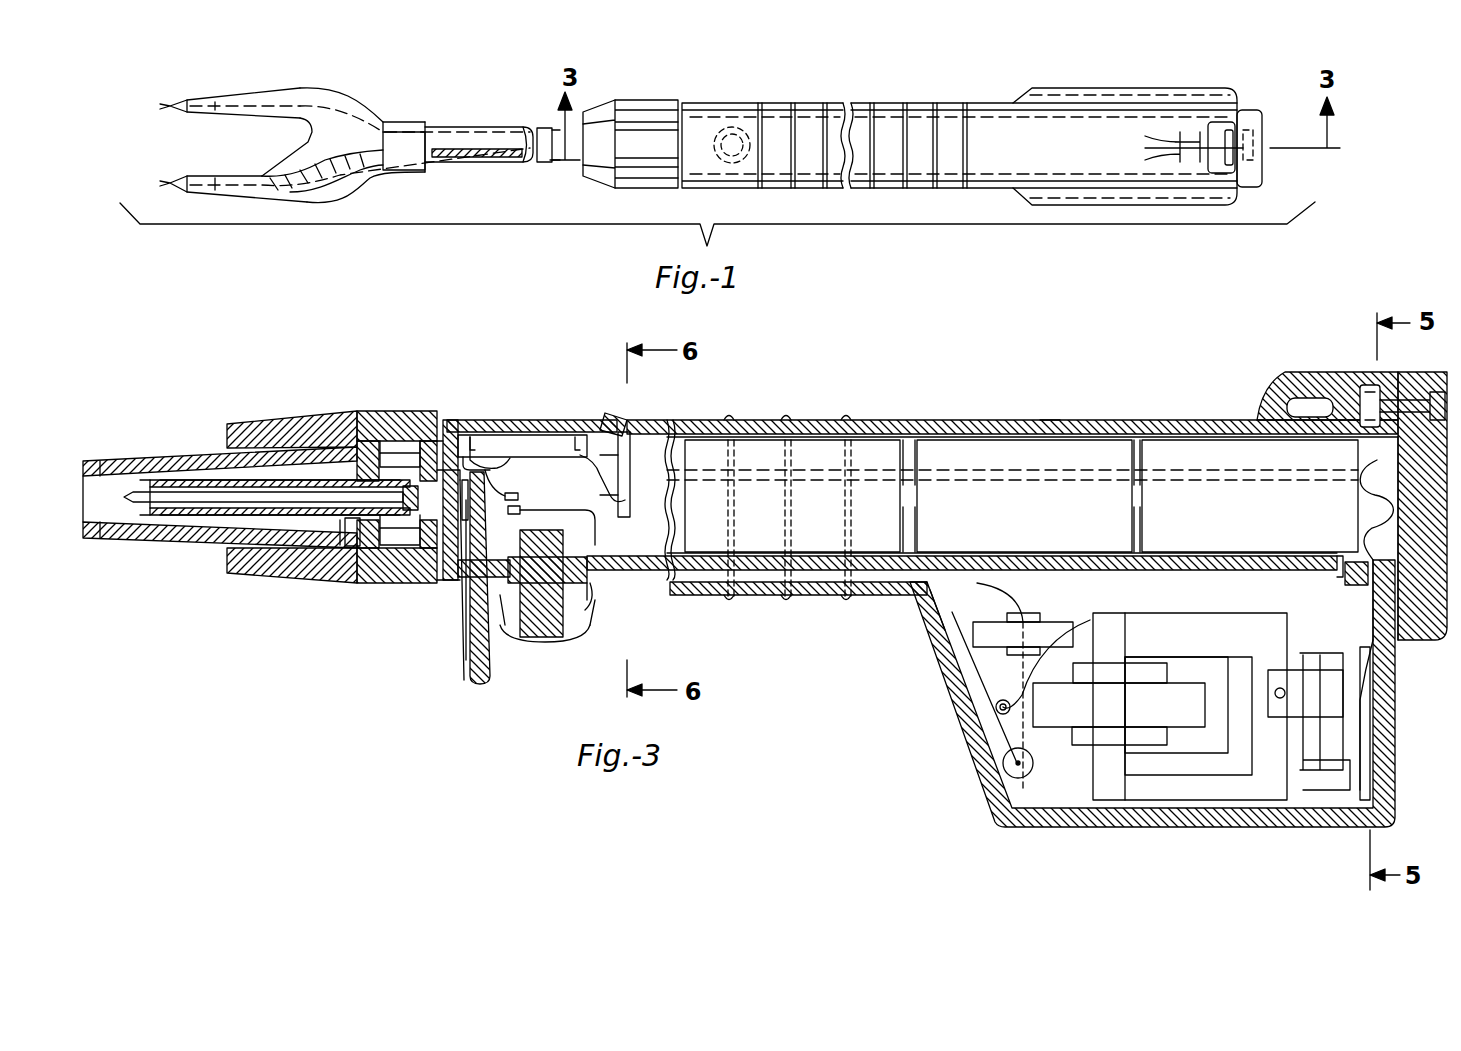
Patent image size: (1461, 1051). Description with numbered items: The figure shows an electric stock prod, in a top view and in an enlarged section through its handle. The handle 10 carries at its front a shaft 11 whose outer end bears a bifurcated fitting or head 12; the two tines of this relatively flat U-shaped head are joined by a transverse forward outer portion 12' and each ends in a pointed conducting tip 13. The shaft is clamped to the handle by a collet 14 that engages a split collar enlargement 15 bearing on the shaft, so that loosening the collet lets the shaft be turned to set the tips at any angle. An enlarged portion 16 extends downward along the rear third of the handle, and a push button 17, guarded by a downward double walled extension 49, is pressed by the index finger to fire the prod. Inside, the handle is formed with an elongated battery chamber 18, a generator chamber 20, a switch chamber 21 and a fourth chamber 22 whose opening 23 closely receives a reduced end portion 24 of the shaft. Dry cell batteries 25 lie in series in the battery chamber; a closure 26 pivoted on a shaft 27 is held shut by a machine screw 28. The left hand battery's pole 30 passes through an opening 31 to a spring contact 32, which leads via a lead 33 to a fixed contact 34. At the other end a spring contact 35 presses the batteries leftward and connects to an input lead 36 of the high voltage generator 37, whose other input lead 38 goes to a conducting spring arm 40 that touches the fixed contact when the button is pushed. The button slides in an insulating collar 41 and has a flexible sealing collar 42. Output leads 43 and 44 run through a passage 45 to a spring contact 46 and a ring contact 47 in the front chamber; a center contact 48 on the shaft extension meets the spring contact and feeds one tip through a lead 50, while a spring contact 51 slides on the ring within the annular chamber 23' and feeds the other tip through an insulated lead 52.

In FIG. 1, the handle 10 is at (882, 93).
In FIG. 3, the handle 10 is at (893, 405).
In FIG. 1, the shaft 11 is at (500, 160).
In FIG. 1, the bifurcated fitting or head 12 is at (397, 168).
In FIG. 1, the transverse forward outer portion of the head 12' is at (389, 145).
In FIG. 1, the pointed conducting tips 13 is at (176, 103).
In FIG. 1, the collet 14 is at (662, 103).
In FIG. 3, the collet 14 is at (372, 411).
In FIG. 1, the split collar enlargement 15 is at (545, 162).
In FIG. 3, the split collar enlargement 15 is at (205, 449).
In FIG. 1, the enlarged portion 16 is at (1085, 206).
In FIG. 3, the enlarged portion 16 is at (960, 745).
In FIG. 1, the push button 17 is at (742, 125).
In FIG. 3, the push button 17 is at (548, 640).
In FIG. 3, the battery chamber 18 is at (1040, 432).
In FIG. 3, the generator chamber 20 is at (1395, 760).
In FIG. 3, the switch chamber 21 is at (507, 432).
In FIG. 3, the fourth chamber 22 is at (398, 453).
In FIG. 3, the opening 23 is at (292, 414).
In FIG. 3, the annular chamber 23' is at (292, 581).
In FIG. 3, the reduced end portion of the shaft 24 is at (398, 583).
In FIG. 3, the dry cell batteries 25 is at (672, 470).
In FIG. 3, the closure 26 is at (1396, 452).
In FIG. 1, the shaft 27 is at (1262, 148).
In FIG. 3, the shaft 27 is at (1440, 640).
In FIG. 3, the machine screw 28 is at (1447, 392).
In FIG. 3, the pole 30 is at (615, 495).
In FIG. 3, the opening 31 is at (616, 414).
In FIG. 3, the spring contact 32 is at (598, 480).
In FIG. 3, the lead 33 is at (520, 468).
In FIG. 3, the fixed contact 34 is at (505, 496).
In FIG. 3, the spring contact 35 is at (1365, 505).
In FIG. 3, the input lead 36 is at (1320, 660).
In FIG. 3, the high voltage generator 37 is at (1178, 682).
In FIG. 3, the input lead 38 is at (1340, 575).
In FIG. 3, the conducting spring arm 40 is at (570, 520).
In FIG. 3, the insulating collar 41 is at (592, 612).
In FIG. 3, the flexible sealing collar 42 is at (590, 640).
In FIG. 3, the high voltage output lead 43 is at (462, 620).
In FIG. 3, the high voltage output lead 44 is at (466, 660).
In FIG. 3, the passage 45 is at (805, 595).
In FIG. 3, the spring contact 46 is at (450, 440).
In FIG. 3, the ring contact 47 is at (348, 585).
In FIG. 3, the center contact 48 is at (455, 578).
In FIG. 3, the double walled extension 49 is at (478, 684).
In FIG. 3, the lead 50 is at (158, 516).
In FIG. 3, the spring contact 51 is at (285, 482).
In FIG. 3, the insulated lead 52 is at (140, 492).